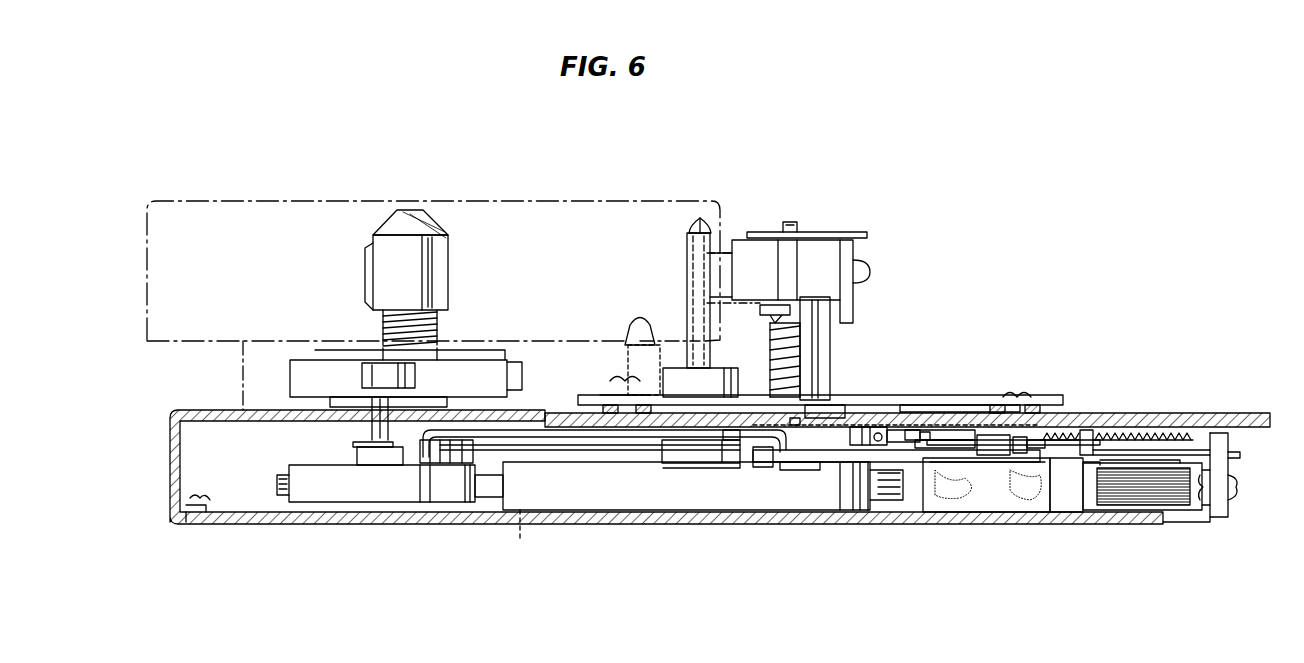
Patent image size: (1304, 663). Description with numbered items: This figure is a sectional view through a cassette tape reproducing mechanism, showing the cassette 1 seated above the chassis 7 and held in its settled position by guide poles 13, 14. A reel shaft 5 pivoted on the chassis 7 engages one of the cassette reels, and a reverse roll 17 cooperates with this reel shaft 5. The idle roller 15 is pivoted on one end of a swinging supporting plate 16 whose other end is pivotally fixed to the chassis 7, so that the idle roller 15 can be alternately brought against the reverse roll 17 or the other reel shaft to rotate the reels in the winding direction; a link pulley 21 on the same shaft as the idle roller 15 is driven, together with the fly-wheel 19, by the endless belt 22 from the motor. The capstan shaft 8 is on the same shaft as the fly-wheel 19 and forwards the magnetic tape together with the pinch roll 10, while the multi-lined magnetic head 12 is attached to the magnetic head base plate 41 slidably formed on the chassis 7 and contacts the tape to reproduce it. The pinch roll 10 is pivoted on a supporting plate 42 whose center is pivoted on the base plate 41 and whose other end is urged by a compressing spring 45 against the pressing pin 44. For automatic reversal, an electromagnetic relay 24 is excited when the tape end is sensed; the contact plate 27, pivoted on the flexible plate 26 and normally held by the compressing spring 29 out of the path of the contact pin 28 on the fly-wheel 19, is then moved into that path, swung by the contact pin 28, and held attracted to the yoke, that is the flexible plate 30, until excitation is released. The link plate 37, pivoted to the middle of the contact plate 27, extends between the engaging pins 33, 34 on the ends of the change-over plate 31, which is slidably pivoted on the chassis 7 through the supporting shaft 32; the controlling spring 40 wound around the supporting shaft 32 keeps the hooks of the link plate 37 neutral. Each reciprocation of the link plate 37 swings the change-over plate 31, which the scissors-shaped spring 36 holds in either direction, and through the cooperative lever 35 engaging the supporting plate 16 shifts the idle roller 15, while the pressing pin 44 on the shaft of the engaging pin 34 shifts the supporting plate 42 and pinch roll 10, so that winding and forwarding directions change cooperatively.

The cassette 1 is at (237, 207).
The reel shaft 5 is at (417, 222).
The chassis 7 is at (168, 472).
The capstan shaft 8 is at (700, 232).
The pinch roll 10 is at (752, 263).
The multi-lined magnetic head 12 is at (690, 247).
The guide pole 13 is at (643, 343).
The guide pole 14 is at (235, 360).
The idle roller 15 is at (375, 375).
The swinging supporting plate 16 is at (450, 448).
The reverse roll 17 is at (312, 373).
The fly-wheel 19 is at (608, 500).
The link pulley 21 is at (315, 490).
The endless belt 22 is at (488, 487).
The electromagnetic relay 24 is at (1170, 510).
The flexible plate 26 is at (1207, 455).
The contact plate 27 is at (1000, 450).
The contact pin 28 is at (755, 462).
The compressing spring 29 is at (1190, 440).
The flexible plate (yoke) 30 is at (983, 503).
The change-over plate 31 is at (820, 437).
The supporting shaft 32 is at (915, 450).
The engaging pin 33 is at (1010, 445).
The engaging pin 34 is at (880, 420).
The cooperative lever 35 is at (573, 428).
The scissors-shaped spring 36 is at (1068, 445).
The link plate 37 is at (850, 442).
The controlling spring 40 is at (878, 446).
The magnetic head base plate 41 is at (988, 403).
The supporting plate 42 is at (790, 235).
The pressing pin 44 is at (835, 402).
The compressing spring 45 is at (835, 348).